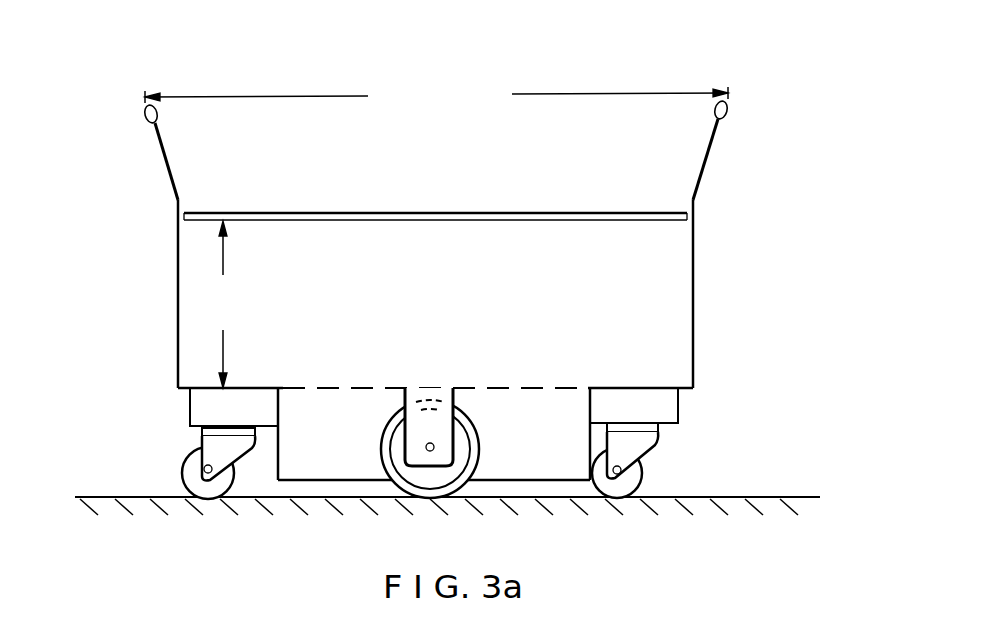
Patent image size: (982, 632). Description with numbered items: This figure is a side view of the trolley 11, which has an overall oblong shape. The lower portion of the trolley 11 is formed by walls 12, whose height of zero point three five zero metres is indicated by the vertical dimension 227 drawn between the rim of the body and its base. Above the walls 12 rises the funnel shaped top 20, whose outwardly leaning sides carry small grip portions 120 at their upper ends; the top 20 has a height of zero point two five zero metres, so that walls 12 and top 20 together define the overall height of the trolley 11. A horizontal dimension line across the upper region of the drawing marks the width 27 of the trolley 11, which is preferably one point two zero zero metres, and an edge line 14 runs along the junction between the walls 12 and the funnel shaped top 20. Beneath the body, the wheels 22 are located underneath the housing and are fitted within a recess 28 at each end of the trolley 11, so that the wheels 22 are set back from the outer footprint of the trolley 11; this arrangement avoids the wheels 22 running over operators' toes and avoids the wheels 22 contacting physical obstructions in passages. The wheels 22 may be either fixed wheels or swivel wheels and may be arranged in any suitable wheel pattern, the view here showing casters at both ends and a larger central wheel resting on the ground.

The trolley 11 is at (748, 79).
The handle grip 120 is at (146, 121).
The funnel shaped top 20 is at (170, 170).
The rim 14 is at (663, 210).
The walls 12 is at (178, 315).
The height of walls 227 is at (221, 304).
The width of trolley 27 is at (436, 96).
The recess 28 is at (667, 428).
The wheels 22 is at (632, 478).